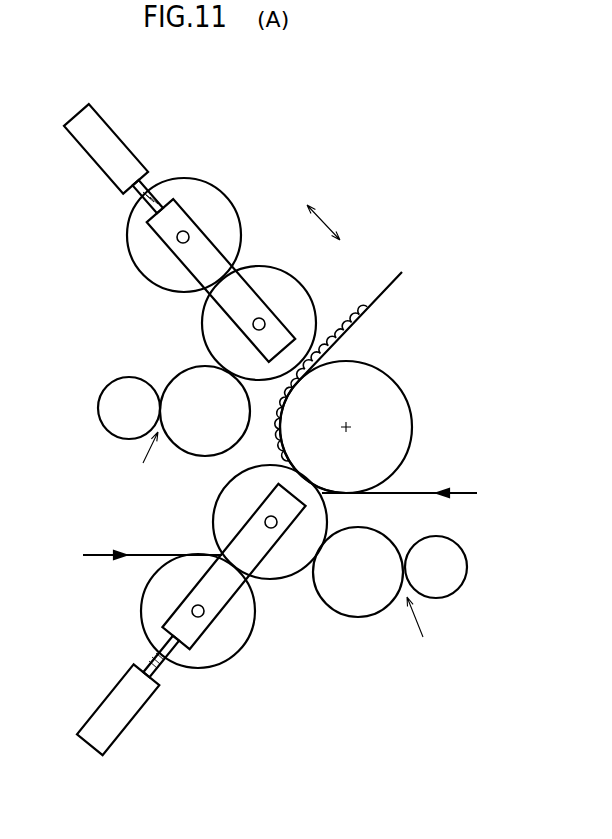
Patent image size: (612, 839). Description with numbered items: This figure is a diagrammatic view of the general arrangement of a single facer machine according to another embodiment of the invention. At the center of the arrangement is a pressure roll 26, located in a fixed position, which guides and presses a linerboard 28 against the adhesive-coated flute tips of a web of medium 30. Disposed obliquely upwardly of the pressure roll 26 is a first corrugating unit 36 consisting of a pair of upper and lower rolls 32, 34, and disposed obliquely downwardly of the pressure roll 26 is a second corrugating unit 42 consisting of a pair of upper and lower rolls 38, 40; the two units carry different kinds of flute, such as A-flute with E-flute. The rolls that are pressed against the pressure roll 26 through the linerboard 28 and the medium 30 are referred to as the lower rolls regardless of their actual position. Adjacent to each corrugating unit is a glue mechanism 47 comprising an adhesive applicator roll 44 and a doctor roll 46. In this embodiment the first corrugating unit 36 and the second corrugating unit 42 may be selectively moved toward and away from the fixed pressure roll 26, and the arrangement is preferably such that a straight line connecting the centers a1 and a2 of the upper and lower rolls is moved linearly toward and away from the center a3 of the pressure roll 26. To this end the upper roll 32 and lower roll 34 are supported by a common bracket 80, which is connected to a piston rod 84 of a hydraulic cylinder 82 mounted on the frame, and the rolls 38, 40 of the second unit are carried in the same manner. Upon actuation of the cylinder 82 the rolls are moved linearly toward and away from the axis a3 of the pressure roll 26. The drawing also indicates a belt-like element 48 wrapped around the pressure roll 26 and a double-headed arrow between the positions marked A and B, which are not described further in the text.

The pressure roll 26 is at (388, 377).
The linerboard 28 is at (473, 493).
The web of medium 30 is at (103, 553).
The upper roll 32 is at (208, 190).
The lower roll 34 is at (268, 266).
The first corrugating unit 36 is at (221, 254).
The upper roll 38 is at (218, 650).
The lower roll 40 is at (277, 568).
The second corrugating unit 42 is at (234, 596).
The adhesive applicator roll 44 is at (193, 445).
The doctor roll 46 is at (112, 425).
The glue mechanism 47 is at (129, 489).
The belt 48 is at (368, 300).
The common bracket 80 is at (197, 267).
The hydraulic cylinder 82 is at (92, 145).
The piston rod 84 is at (142, 200).
The center of upper roll a1 is at (177, 239).
The center of lower roll a2 is at (247, 326).
The center of pressure roll a3 is at (350, 427).
The position A is at (317, 210).
The position B is at (349, 253).